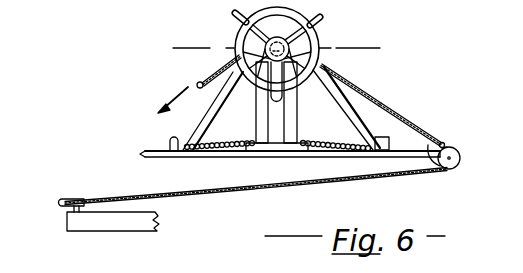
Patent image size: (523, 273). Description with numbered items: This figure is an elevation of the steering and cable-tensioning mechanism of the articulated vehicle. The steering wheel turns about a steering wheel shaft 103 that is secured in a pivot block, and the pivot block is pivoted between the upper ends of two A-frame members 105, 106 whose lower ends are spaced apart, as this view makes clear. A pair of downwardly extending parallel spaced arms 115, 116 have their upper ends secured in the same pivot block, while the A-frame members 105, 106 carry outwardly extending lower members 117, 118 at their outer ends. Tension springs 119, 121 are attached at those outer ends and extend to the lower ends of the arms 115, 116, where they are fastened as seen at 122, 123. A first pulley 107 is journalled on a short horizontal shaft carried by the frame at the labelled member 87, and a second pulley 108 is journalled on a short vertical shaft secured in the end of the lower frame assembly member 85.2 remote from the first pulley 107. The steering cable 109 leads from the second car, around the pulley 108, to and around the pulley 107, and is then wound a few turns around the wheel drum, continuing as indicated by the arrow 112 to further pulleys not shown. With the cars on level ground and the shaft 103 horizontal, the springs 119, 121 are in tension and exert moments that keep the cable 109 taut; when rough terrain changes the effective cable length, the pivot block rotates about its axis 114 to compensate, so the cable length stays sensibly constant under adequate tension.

The steering wheel shaft 103 is at (320, 28).
The pivot block axis 114 is at (191, 46).
The A-frame member 105 is at (197, 84).
The A-frame member 106 is at (343, 78).
The steering cable 109 is at (392, 103).
The pivot pin 87 is at (433, 144).
The first pulley 107 is at (452, 158).
The arrow 112 is at (172, 101).
The outwardly extending lower member 117 is at (175, 147).
The downwardly extending arm 115 is at (255, 112).
The downwardly extending arm 116 is at (290, 120).
The tension spring 119 is at (243, 137).
The tension spring 121 is at (321, 153).
The spring attachment point 122 is at (221, 153).
The spring attachment point 123 is at (264, 152).
The outwardly extending lower member 118 is at (383, 170).
The second pulley 108 is at (80, 196).
The lower frame assembly member 85.2 is at (160, 226).